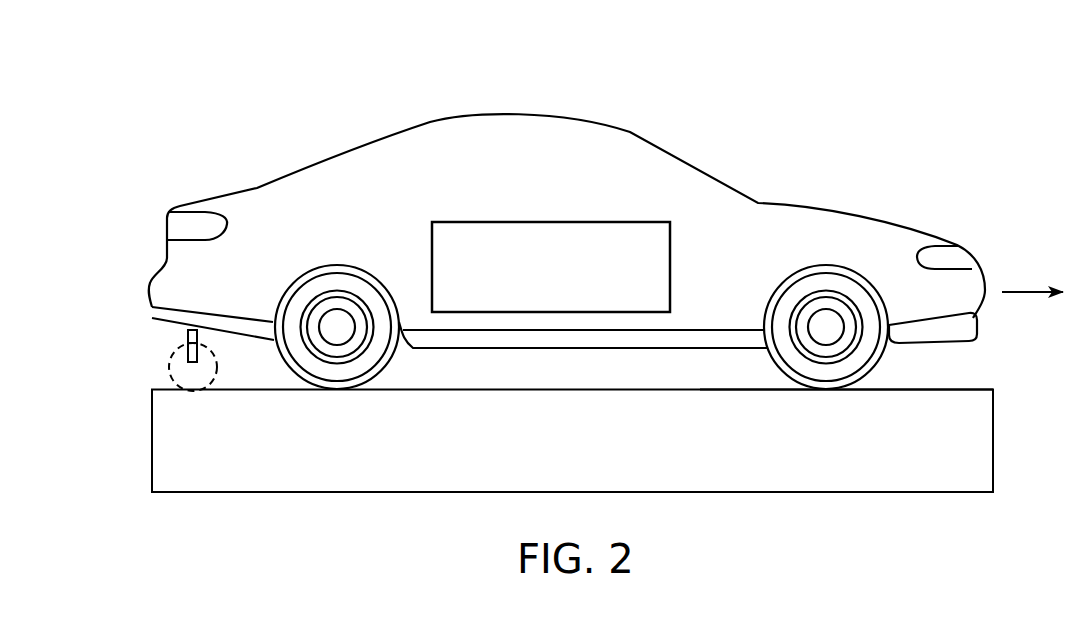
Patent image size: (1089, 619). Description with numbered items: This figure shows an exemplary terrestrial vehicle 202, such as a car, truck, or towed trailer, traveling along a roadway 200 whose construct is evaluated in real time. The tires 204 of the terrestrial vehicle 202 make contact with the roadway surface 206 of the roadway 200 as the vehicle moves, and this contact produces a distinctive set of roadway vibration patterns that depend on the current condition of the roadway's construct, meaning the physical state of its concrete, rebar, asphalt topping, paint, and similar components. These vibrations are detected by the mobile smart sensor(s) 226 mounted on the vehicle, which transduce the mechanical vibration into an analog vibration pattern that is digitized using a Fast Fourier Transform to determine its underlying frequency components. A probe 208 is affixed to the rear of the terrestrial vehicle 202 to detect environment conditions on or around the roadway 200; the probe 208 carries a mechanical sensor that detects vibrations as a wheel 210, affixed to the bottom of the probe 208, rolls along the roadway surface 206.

The roadway 200 is at (571, 483).
The terrestrial vehicle 202 is at (567, 197).
The tires 204 is at (581, 354).
The roadway surface 206 is at (886, 356).
The probe 208 is at (118, 325).
The wheel 210 is at (131, 384).
The mobile smart sensor(s) 226 is at (576, 295).